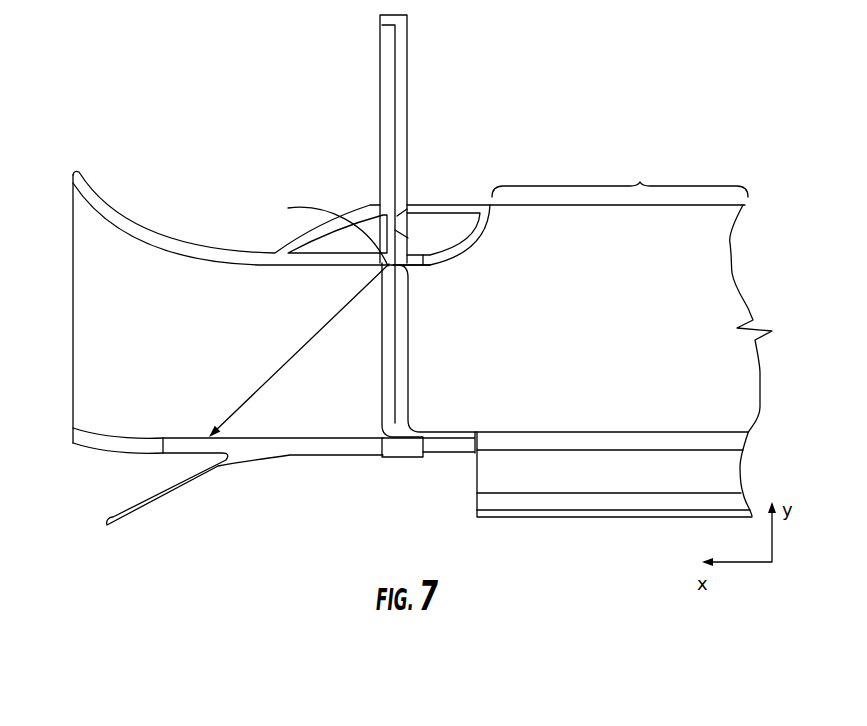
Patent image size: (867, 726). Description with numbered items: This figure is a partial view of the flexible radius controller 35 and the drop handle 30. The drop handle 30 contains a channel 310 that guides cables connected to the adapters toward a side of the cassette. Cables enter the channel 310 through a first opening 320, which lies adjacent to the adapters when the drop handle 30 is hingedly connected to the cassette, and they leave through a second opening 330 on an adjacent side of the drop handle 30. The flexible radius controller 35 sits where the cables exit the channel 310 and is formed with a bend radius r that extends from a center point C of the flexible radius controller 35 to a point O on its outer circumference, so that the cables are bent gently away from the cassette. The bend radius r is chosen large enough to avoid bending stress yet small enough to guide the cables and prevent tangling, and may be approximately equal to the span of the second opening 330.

The flexible radius controller 35 is at (165, 240).
The second opening 330 is at (409, 345).
The channel 310 is at (586, 376).
The first opening 320 is at (640, 182).
The drop handle 30 is at (506, 530).
The center point C is at (332, 232).
The bend radius r is at (277, 371).
The point on the outer circumference O is at (210, 434).